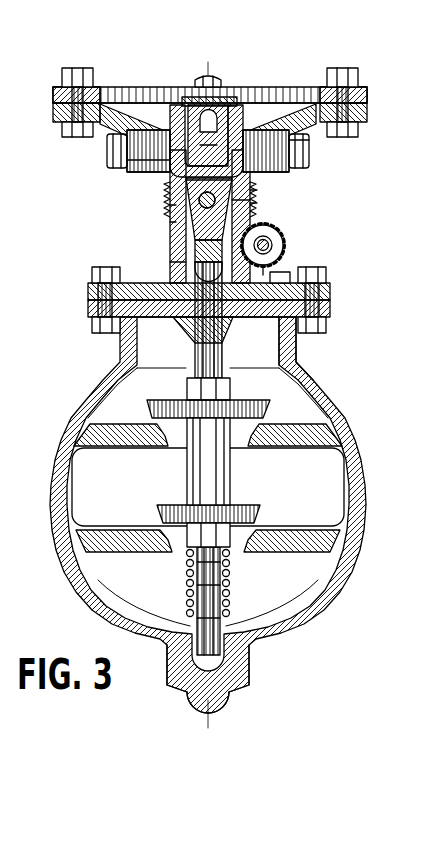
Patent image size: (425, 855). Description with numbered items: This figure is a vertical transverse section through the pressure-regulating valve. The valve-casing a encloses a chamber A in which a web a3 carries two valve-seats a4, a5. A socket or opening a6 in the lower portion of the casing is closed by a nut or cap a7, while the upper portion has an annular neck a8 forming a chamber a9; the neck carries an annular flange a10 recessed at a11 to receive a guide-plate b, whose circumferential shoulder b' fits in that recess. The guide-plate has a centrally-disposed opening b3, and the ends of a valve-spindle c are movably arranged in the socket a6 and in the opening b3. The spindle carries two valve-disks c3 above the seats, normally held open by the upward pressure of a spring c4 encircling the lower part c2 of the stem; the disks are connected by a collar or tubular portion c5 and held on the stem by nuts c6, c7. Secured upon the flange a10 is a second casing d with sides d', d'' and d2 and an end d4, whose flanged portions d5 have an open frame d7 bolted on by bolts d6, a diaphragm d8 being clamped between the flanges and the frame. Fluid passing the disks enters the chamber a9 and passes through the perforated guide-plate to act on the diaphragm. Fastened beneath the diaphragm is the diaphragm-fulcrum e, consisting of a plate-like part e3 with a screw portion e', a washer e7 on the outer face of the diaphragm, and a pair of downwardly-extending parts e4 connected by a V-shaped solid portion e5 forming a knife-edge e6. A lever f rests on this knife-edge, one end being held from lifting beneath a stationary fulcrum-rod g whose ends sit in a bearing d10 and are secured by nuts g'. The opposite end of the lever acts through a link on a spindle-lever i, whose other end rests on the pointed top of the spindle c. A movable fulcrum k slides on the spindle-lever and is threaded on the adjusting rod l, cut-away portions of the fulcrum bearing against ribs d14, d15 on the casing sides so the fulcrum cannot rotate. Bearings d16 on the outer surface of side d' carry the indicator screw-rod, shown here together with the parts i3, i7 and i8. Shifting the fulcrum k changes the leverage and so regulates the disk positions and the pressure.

The valve-casing a is at (345, 407).
The web a3 is at (304, 445).
The valve-seat a4 is at (263, 434).
The valve-seat a5 is at (267, 533).
The socket or opening a6 is at (240, 645).
The nut or cap a7 is at (187, 698).
The annular neck a8 is at (298, 352).
The chamber a9 is at (277, 347).
The annular flange a10 is at (88, 313).
The recess a11 is at (88, 308).
The chamber of the valve-casing A is at (130, 493).
The guide-plate b is at (209, 247).
The shoulder b' is at (210, 269).
The centrally-disposed opening b3 is at (195, 345).
The valve-spindle c is at (216, 305).
The lower end of the valve-spindle c2 is at (230, 618).
The valve-disks c3 is at (235, 401).
The spring c4 is at (187, 582).
The collar or tubular portion c5 is at (226, 468).
The nut c6 is at (187, 390).
The nut c7 is at (230, 553).
The second casing d is at (195, 158).
The side of the casing d' is at (266, 205).
The yoke boss d'' is at (120, 176).
The side of the casing d2 is at (190, 226).
The end of the casing d4 is at (187, 181).
The flanged portions d5 is at (53, 109).
The bolts d6 is at (77, 68).
The open frame d7 is at (312, 95).
The diaphragm d8 is at (280, 100).
The bearing d10 is at (300, 170).
The rib or guide d14 is at (290, 200).
The rib or guide d15 is at (165, 196).
The bearings d16 is at (285, 232).
The diaphragm-fulcrum e is at (196, 73).
The screw portion e' is at (213, 99).
The plate-like part e3 is at (182, 100).
The downwardly-extending parts e4 is at (168, 112).
The solid portion e5 is at (256, 190).
The knife-edge e6 is at (258, 200).
The washer e7 is at (224, 110).
The lever f is at (290, 148).
The stationary fulcrum-rod g is at (122, 151).
The nuts g' is at (215, 154).
The spindle-lever i is at (197, 256).
The stem guide i3 is at (170, 222).
The gear pin i7 is at (270, 245).
The gear hub i8 is at (285, 250).
The movable fulcrum k is at (207, 214).
The rod l is at (168, 212).